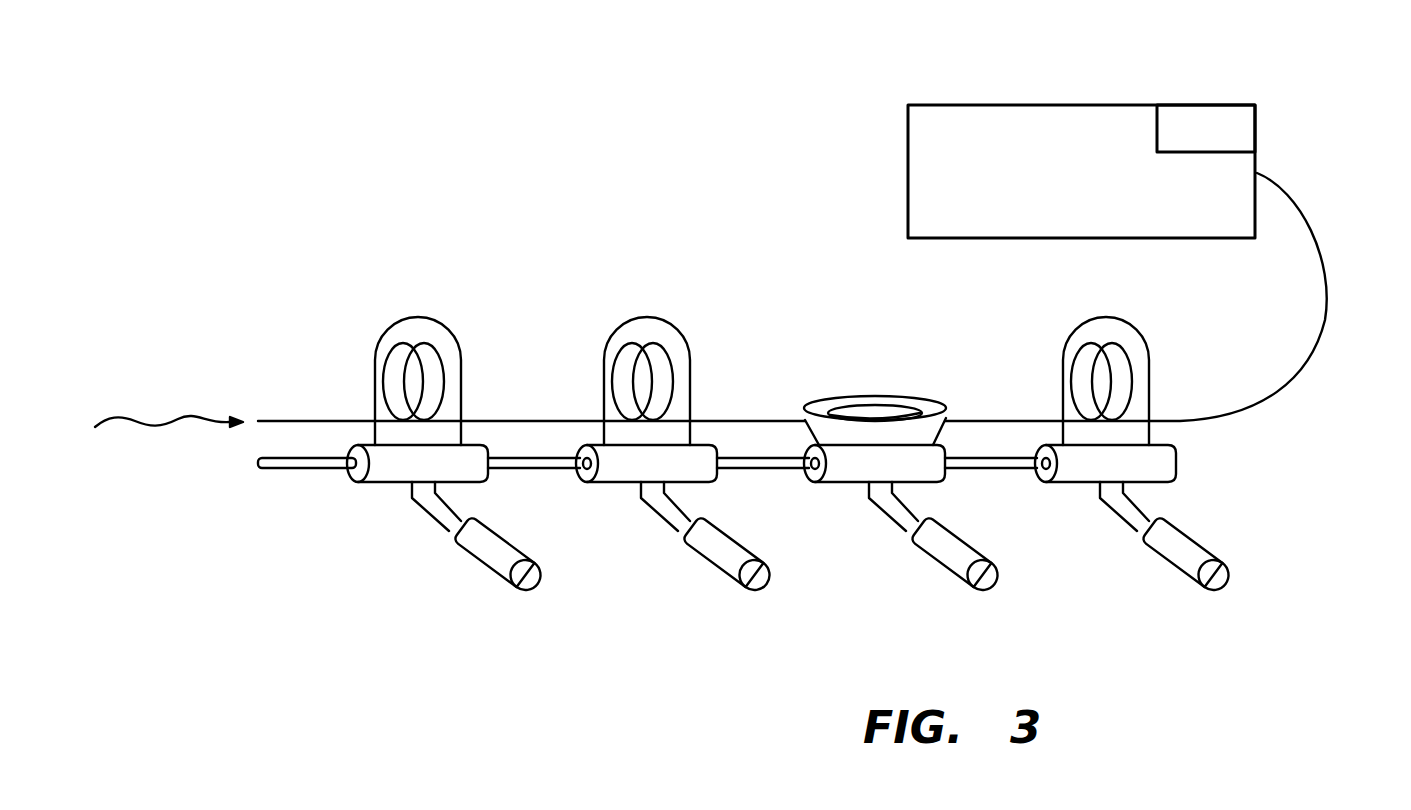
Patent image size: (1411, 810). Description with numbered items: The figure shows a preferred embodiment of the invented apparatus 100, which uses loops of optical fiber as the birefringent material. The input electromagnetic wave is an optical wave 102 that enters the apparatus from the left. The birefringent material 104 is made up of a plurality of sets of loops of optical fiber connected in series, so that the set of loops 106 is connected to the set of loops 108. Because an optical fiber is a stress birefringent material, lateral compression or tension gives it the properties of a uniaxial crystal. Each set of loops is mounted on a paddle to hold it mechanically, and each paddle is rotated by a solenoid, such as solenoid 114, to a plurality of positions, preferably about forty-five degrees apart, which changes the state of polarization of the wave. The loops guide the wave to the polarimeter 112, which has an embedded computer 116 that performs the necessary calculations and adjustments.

The fiber optic polarization control system 100 is at (437, 218).
The optical wave 102 is at (146, 410).
The birefringent material 104 is at (620, 297).
The set of loops 106 is at (412, 335).
The set of loops 108 is at (682, 347).
The polarimeter 112 is at (1052, 130).
The solenoid 114 is at (730, 623).
The embedded computer 116 is at (1235, 132).